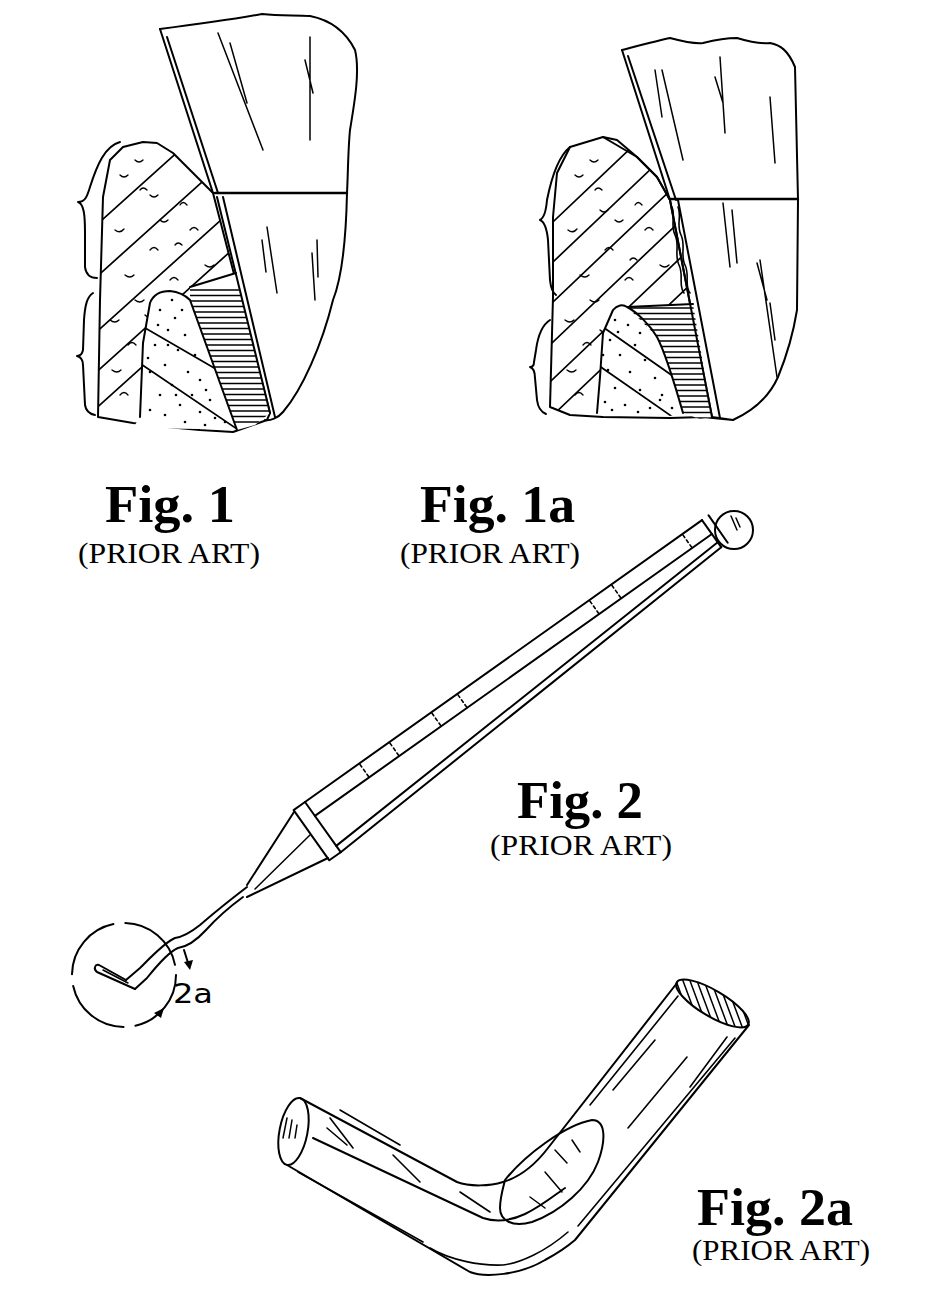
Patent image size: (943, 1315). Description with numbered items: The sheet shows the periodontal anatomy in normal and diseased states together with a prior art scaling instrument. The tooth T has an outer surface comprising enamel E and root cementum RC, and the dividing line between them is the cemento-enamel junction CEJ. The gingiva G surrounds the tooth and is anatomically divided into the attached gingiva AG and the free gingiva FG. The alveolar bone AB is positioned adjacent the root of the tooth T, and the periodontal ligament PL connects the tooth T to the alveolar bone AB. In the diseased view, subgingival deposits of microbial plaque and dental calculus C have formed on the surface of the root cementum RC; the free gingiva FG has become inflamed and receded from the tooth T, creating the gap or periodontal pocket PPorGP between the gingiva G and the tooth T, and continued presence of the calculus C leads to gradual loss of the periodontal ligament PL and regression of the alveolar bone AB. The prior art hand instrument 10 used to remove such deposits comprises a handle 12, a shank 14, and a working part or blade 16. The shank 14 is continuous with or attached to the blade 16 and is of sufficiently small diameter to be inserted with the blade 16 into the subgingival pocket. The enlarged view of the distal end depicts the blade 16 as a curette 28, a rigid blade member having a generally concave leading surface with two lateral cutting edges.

In FIG. 1, the tooth T is at (167, 55).
In FIG. 1A, the tooth T is at (623, 58).
In FIG. 1, the enamel E is at (340, 105).
In FIG. 1A, the enamel E is at (763, 132).
In FIG. 1, the cemento-enamel junction CEJ is at (322, 190).
In FIG. 1A, the cemento-enamel junction CEJ is at (757, 199).
In FIG. 1, the gingiva G is at (143, 143).
In FIG. 1A, the gingiva G is at (603, 138).
In FIG. 1, the free gingiva FG is at (71, 210).
In FIG. 1A, the free gingiva FG is at (530, 221).
In FIG. 1, the attached gingiva AG is at (64, 354).
In FIG. 1A, the attached gingiva AG is at (515, 367).
In FIG. 1, the root cementum RC is at (333, 300).
In FIG. 1A, the root cementum RC is at (777, 247).
In FIG. 1, the alveolar bone AB is at (150, 423).
In FIG. 1A, the alveolar bone AB is at (673, 419).
In FIG. 1, the periodontal ligament PL is at (273, 420).
In FIG. 1A, the periodontal ligament PL is at (735, 417).
In FIG. 1A, the periodontal pocket or gap PPorGP is at (625, 133).
In FIG. 1A, the calculus C is at (688, 303).
In FIG. 2, the hand instrument 10 is at (412, 808).
In FIG. 2, the handle 12 is at (379, 750).
In FIG. 2, the shank 14 is at (217, 913).
In FIG. 2, the working part or blade 16 is at (113, 993).
In FIG. 2A, the working part or blade 16 is at (296, 1192).
In FIG. 2A, the curette blade 28 is at (380, 1152).